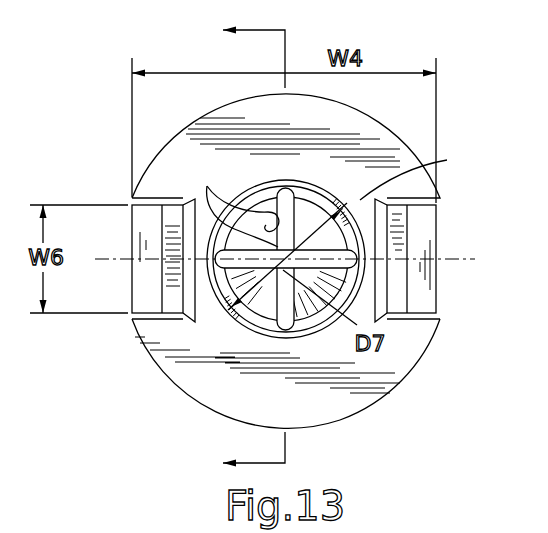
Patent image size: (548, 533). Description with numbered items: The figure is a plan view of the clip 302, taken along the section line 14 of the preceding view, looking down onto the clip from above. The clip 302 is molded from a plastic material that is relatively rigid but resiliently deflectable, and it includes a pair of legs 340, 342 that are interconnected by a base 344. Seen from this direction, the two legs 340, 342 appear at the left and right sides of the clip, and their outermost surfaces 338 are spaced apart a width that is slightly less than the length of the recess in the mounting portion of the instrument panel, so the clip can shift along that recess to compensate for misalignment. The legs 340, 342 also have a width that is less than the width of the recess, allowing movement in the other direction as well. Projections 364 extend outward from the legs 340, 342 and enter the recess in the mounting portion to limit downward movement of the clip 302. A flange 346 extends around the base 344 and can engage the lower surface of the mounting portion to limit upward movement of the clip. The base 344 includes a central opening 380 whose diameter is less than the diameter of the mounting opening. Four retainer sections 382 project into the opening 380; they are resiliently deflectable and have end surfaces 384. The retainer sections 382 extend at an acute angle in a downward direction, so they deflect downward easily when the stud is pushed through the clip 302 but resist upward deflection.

The section line 14- 14 is at (238, 246).
The clip 302 is at (403, 123).
The outermost surfaces 338 is at (133, 247).
The leg 340 is at (175, 227).
The leg 342 is at (398, 233).
The base 344 is at (447, 160).
The flange 346 is at (427, 350).
The projections 364 is at (150, 283).
The opening 380 is at (303, 281).
The retainer sections 382 is at (305, 203).
The end surfaces 384 is at (207, 188).